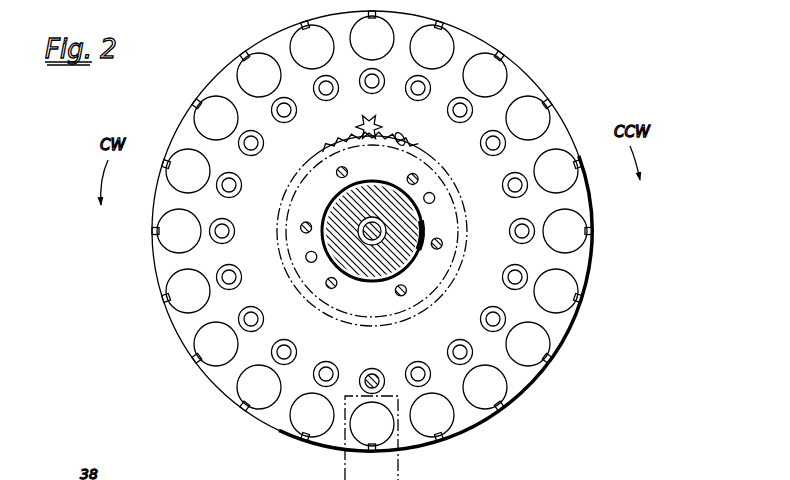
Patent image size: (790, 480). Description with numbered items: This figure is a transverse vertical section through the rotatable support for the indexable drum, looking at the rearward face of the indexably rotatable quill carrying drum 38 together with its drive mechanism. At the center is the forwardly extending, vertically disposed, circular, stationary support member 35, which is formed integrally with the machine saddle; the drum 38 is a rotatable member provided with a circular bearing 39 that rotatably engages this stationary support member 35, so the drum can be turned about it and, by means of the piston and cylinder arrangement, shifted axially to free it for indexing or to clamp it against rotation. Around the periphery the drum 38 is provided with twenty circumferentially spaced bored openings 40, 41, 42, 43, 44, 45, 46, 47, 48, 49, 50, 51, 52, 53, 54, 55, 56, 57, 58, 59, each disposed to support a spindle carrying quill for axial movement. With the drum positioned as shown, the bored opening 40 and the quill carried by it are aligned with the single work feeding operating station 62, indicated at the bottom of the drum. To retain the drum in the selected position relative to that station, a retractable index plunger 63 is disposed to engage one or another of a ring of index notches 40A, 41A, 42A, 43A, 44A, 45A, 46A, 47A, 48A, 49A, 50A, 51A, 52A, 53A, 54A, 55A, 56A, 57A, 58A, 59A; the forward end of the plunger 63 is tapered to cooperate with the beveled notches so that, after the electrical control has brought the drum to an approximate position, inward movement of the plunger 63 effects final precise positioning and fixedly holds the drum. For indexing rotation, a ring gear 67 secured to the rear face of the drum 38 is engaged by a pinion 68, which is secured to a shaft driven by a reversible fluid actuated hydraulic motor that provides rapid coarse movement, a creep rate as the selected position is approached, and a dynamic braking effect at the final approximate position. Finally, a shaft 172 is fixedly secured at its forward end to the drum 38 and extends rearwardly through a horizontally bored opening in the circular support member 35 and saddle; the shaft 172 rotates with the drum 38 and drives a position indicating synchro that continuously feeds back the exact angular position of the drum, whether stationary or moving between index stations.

The circular stationary support member 35 is at (358, 270).
The indexably rotatable quill carrying drum 38 is at (518, 82).
The circular bearing 39 is at (418, 247).
The bored opening 40 is at (359, 449).
The bored opening 41 is at (303, 434).
The bored opening 42 is at (244, 405).
The bored opening 43 is at (196, 359).
The bored opening 44 is at (166, 300).
The bored opening 45 is at (155, 232).
The bored opening 46 is at (166, 165).
The bored opening 47 is at (196, 105).
The bored opening 48 is at (243, 55).
The bored opening 49 is at (304, 26).
The bored opening 50 is at (369, 16).
The bored opening 51 is at (441, 26).
The bored opening 52 is at (501, 56).
The bored opening 53 is at (549, 104).
The bored opening 54 is at (579, 164).
The bored opening 55 is at (590, 231).
The bored opening 56 is at (579, 298).
The bored opening 57 is at (549, 358).
The bored opening 58 is at (501, 406).
The bored opening 59 is at (441, 437).
The index notch 40A is at (379, 371).
The index notch 41A is at (334, 366).
The index notch 42A is at (294, 347).
The index notch 43A is at (262, 314).
The index notch 44A is at (241, 275).
The index notch 45A is at (234, 231).
The index notch 46A is at (241, 185).
The index notch 47A is at (262, 148).
The index notch 48A is at (294, 115).
The index notch 49A is at (334, 93).
The index notch 50A is at (382, 76).
The index notch 51A is at (418, 101).
The index notch 52A is at (455, 120).
The index notch 53A is at (483, 150).
The index notch 54A is at (507, 190).
The index notch 55A is at (510, 231).
The index notch 56A is at (504, 274).
The index notch 57A is at (485, 311).
The index notch 58A is at (459, 340).
The index notch 59A is at (422, 362).
The work feeding operating station 62 is at (398, 462).
The retractable index plunger 63 is at (381, 378).
The ring gear 67 is at (400, 146).
The pinion 68 is at (373, 120).
The shaft 172 is at (372, 219).